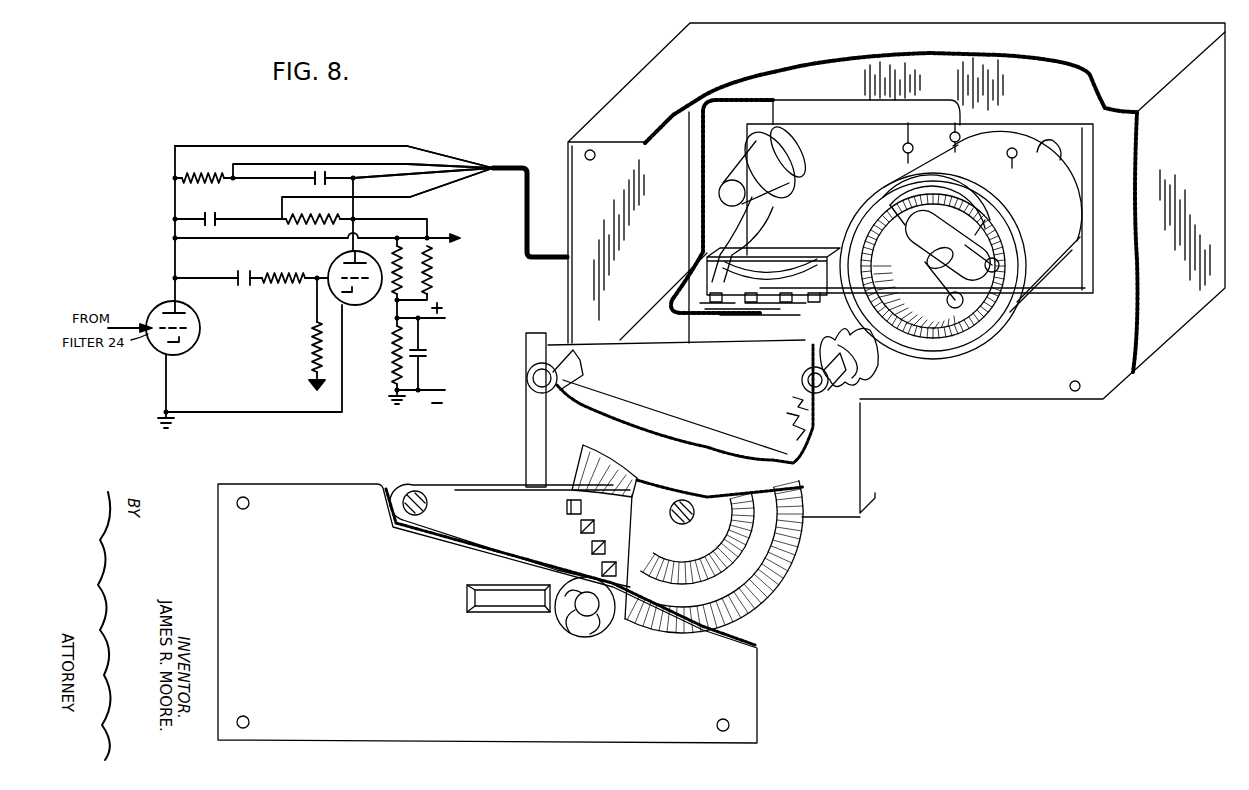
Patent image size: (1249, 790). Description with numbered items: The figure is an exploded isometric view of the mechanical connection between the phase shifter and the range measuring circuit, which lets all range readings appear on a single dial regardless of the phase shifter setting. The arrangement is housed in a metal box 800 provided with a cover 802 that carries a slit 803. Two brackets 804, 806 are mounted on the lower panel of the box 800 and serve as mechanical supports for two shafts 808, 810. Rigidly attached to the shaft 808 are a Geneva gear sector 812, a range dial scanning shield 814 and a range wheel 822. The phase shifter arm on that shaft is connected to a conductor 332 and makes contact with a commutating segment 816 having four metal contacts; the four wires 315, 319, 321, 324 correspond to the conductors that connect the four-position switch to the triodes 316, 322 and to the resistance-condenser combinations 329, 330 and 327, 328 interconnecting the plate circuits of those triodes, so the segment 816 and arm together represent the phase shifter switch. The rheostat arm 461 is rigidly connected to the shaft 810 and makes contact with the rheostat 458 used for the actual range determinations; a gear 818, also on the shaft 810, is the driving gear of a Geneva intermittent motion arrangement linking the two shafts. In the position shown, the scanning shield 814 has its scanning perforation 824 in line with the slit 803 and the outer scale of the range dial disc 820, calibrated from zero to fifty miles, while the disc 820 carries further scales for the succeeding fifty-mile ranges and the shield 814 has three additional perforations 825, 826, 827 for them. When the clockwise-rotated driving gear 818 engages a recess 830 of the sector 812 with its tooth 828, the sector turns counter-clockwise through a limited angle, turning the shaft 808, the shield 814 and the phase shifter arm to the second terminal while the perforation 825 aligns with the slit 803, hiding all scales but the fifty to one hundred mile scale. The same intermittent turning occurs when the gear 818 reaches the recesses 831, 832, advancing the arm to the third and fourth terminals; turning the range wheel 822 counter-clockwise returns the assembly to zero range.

The wire 315 is at (410, 146).
The wire 319 is at (445, 163).
The wire 321 is at (410, 197).
The wire 324 is at (445, 174).
The resistance 327 is at (214, 173).
The condenser 328 is at (312, 176).
The resistance 329 is at (213, 214).
The condenser 330 is at (306, 223).
The triode 316 is at (156, 308).
The triode 322 is at (340, 264).
The conductor 332 is at (770, 116).
The shaft 808 is at (738, 172).
The rheostat arm 461 is at (888, 180).
The shaft 810 is at (1040, 145).
The bracket 806 is at (1080, 248).
The commutating segment 816 is at (796, 268).
The rheostat 458 is at (965, 342).
The metal box 800 is at (1165, 326).
The tooth 828 is at (870, 358).
The gear 818 is at (855, 372).
The recess 830 is at (800, 370).
The recess 831 is at (796, 391).
The recess 832 is at (787, 414).
The Geneva gear sector 812 is at (603, 385).
The bracket 804 is at (848, 445).
The range dial scanning shield 814 is at (470, 497).
The scanning perforation 824 is at (565, 506).
The perforation 825 is at (579, 526).
The perforation 826 is at (590, 547).
The perforation 827 is at (600, 567).
The slit 803 is at (510, 608).
The range wheel 822 is at (600, 625).
The range dial disc 820 is at (805, 540).
The cover 802 is at (743, 686).